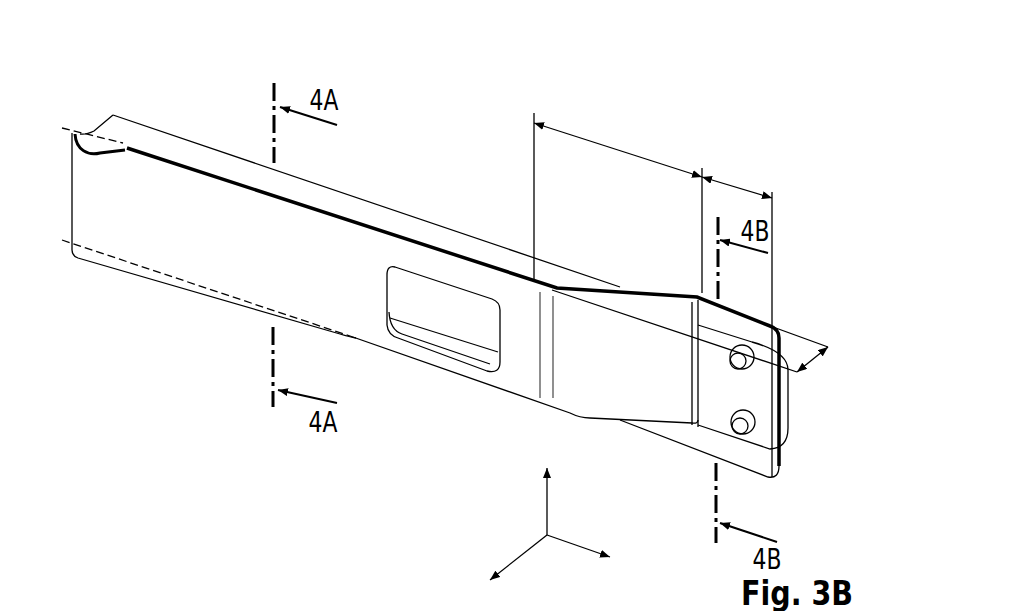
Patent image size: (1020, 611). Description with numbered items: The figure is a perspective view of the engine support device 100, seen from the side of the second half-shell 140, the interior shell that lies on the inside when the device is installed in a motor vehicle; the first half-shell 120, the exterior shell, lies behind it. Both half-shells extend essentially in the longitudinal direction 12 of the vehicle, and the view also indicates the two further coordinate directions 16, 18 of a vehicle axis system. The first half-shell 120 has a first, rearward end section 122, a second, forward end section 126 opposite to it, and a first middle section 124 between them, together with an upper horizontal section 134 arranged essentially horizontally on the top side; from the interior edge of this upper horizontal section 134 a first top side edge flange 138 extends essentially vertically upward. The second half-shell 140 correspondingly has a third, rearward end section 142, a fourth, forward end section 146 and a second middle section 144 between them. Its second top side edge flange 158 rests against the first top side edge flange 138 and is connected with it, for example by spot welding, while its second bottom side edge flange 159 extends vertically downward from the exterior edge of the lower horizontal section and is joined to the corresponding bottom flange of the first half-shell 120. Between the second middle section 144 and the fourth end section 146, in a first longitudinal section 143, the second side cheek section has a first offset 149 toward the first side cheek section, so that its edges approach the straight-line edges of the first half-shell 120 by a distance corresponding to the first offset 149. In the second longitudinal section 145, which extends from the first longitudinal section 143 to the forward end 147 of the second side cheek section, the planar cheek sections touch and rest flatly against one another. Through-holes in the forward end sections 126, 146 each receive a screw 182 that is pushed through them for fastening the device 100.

The engine support device 100 is at (457, 279).
The first half-shell 120 is at (358, 187).
The first end section 122 is at (123, 95).
The first middle section 124 is at (432, 212).
The second end section 126 is at (785, 312).
The upper horizontal section 134 is at (168, 142).
The first top side edge flange 138 is at (647, 288).
The second half-shell 140 is at (242, 257).
The third end section 142 is at (83, 280).
The first longitudinal section 143 is at (617, 148).
The second middle section 144 is at (413, 365).
The second longitudinal section 145 is at (740, 190).
The fourth end section 146 is at (703, 463).
The forward end 147 is at (790, 410).
The first offset 149 is at (810, 365).
The second top side edge flange 158 is at (240, 197).
The second bottom side edge flange 159 is at (170, 280).
The screw 182 is at (755, 425).
The longitudinal direction 12 is at (568, 545).
The y axis 16 is at (522, 555).
The z axis 18 is at (545, 512).